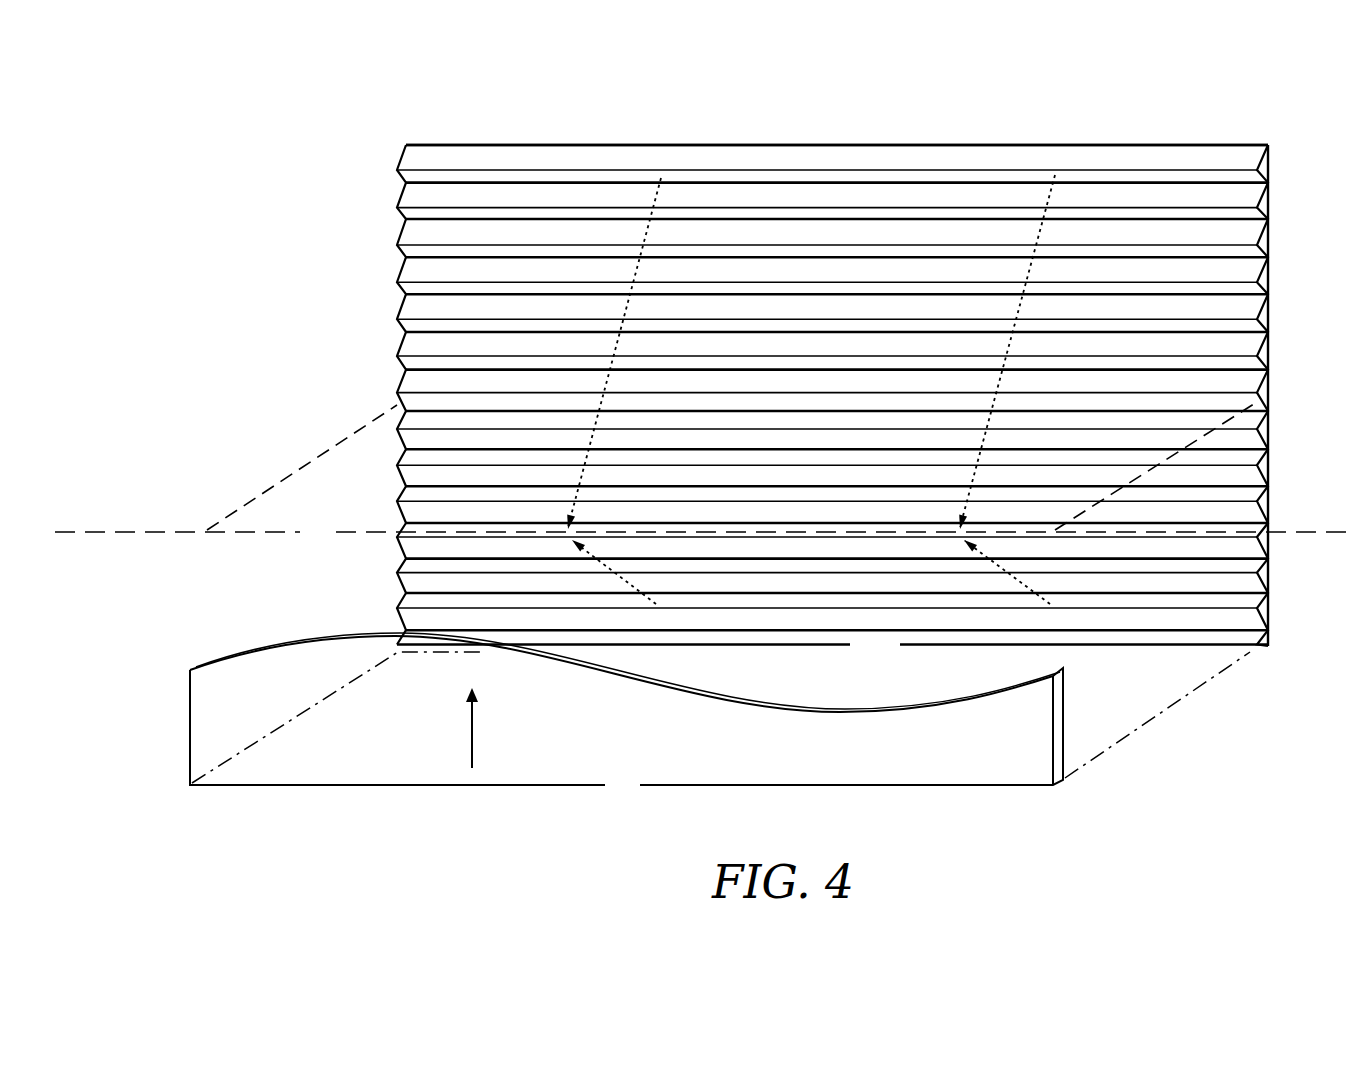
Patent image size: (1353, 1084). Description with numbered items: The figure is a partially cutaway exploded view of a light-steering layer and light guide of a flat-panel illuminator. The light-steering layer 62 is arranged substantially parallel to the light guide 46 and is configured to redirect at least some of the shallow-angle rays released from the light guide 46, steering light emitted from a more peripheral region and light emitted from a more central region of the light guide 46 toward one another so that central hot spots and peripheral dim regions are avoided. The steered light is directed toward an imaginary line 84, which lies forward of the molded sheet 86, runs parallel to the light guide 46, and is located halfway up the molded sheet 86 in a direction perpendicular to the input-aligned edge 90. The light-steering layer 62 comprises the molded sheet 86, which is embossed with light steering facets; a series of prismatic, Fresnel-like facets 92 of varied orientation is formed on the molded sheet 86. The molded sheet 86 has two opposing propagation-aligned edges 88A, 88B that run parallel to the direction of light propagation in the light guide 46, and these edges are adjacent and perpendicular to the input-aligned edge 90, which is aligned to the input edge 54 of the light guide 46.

The light-steering layer 62 is at (866, 372).
The molded sheet 86 is at (481, 145).
The prismatic, Fresnel-like facets 92 is at (1310, 178).
The input-aligned edge 90 is at (832, 646).
The propagation-aligned edge 88A is at (382, 311).
The propagation-aligned edge 88B is at (1296, 316).
The imaginary line 84 is at (702, 533).
The light guide 46 is at (720, 715).
The input edge 54 is at (621, 786).